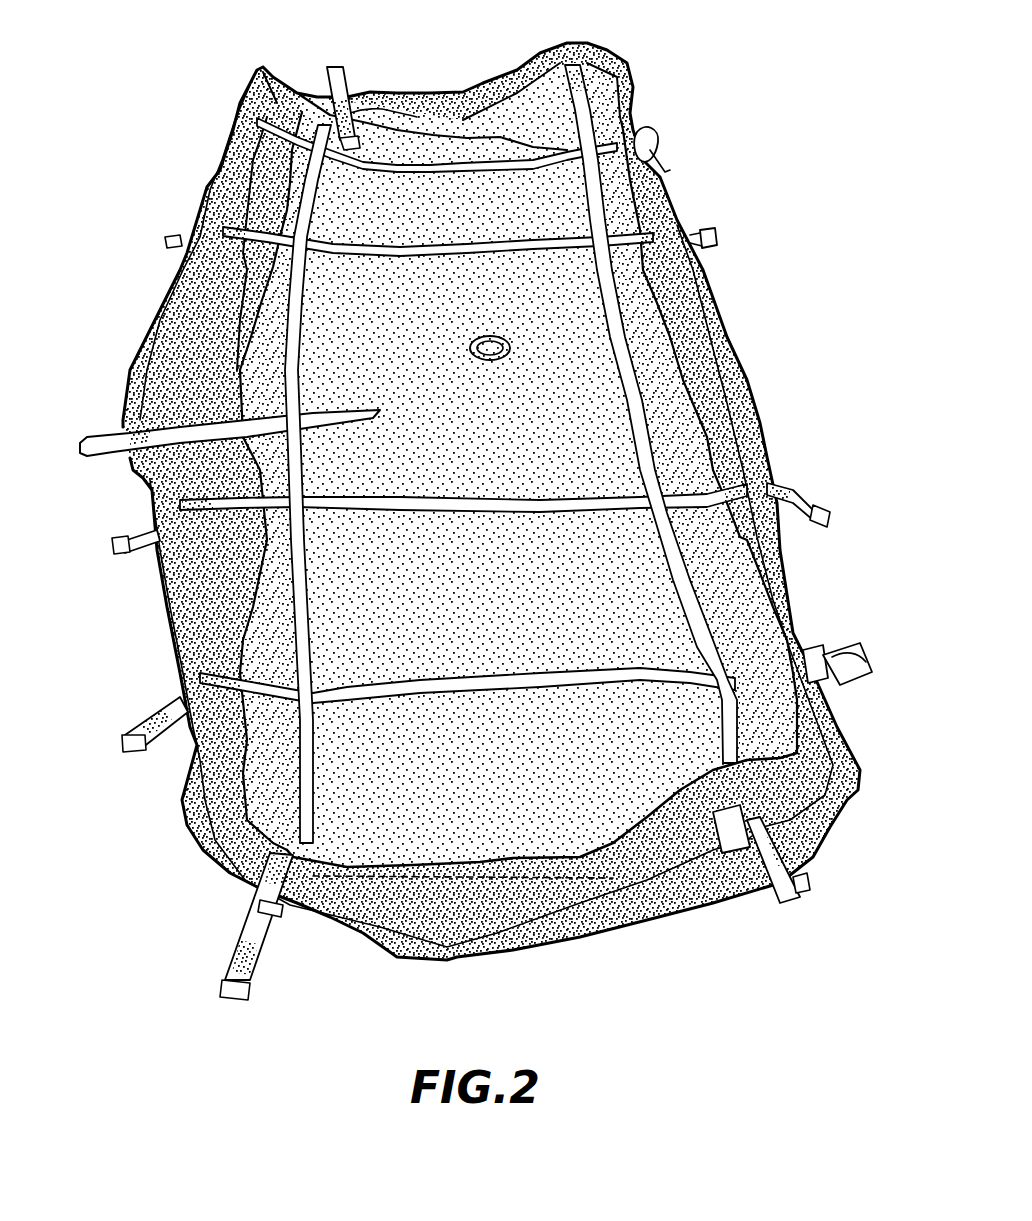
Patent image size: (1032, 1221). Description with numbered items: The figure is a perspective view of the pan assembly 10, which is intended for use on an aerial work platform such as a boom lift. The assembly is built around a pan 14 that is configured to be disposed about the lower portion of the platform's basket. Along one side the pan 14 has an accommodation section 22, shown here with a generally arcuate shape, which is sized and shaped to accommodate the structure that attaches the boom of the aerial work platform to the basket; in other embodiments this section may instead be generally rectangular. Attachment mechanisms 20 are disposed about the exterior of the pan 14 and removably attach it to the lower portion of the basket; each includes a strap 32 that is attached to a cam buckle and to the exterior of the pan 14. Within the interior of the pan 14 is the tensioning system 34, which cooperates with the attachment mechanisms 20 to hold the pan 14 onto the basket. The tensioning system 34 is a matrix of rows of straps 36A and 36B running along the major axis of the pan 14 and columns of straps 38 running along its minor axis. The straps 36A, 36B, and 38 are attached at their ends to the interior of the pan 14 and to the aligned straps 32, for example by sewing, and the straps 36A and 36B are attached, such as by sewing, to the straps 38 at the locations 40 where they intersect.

The pan assembly 10 is at (818, 44).
The pan 14 is at (752, 366).
The attachment mechanisms 20 is at (360, 77).
The accommodation section 22 is at (96, 380).
The strap 32 is at (263, 932).
The tensioning system 34 is at (478, 763).
The straps 36A is at (293, 318).
The straps 36B is at (612, 337).
The straps 38 is at (463, 250).
The locations 40 is at (297, 236).